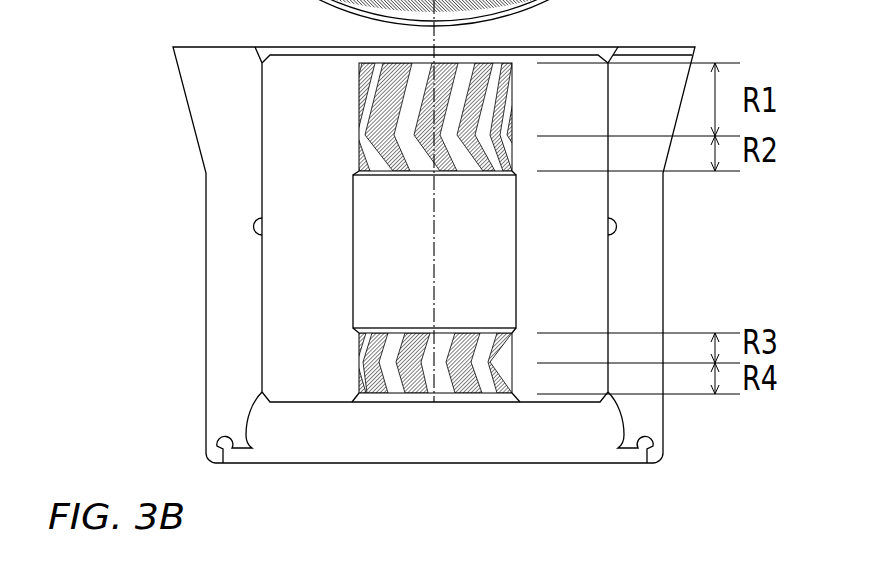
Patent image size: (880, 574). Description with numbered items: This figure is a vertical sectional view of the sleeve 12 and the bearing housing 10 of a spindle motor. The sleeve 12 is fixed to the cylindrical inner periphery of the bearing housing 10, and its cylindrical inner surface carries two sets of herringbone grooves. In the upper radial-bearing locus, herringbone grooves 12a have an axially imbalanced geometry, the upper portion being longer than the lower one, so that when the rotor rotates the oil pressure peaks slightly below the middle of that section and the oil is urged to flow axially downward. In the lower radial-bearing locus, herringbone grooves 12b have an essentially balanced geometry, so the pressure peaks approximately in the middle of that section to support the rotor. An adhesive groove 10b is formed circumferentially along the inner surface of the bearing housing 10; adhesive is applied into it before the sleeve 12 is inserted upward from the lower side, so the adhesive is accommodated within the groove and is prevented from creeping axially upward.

The bearing housing 10 is at (232, 100).
The adhesive groove 10b is at (255, 225).
The sleeve 12 is at (544, 202).
The herringbone grooves 12a is at (483, 173).
The herringbone grooves 12b is at (510, 328).